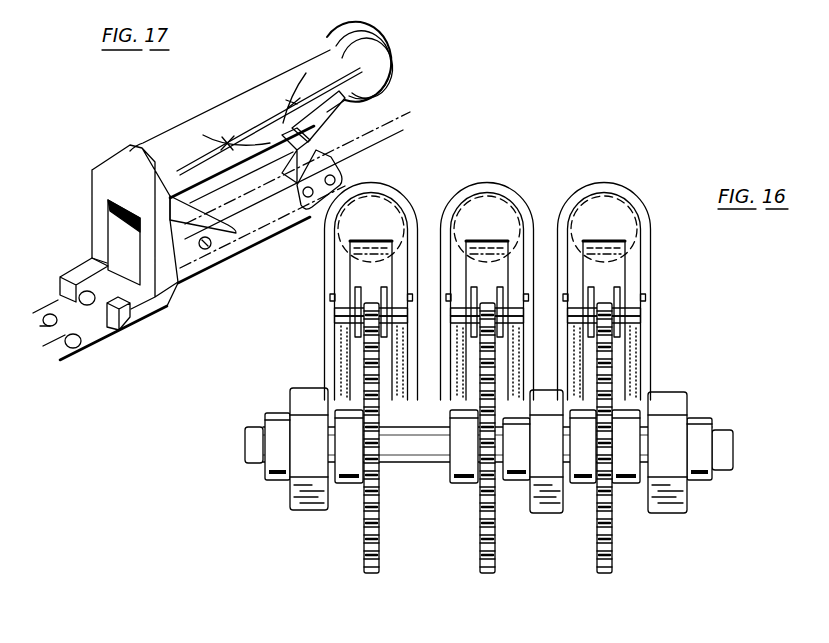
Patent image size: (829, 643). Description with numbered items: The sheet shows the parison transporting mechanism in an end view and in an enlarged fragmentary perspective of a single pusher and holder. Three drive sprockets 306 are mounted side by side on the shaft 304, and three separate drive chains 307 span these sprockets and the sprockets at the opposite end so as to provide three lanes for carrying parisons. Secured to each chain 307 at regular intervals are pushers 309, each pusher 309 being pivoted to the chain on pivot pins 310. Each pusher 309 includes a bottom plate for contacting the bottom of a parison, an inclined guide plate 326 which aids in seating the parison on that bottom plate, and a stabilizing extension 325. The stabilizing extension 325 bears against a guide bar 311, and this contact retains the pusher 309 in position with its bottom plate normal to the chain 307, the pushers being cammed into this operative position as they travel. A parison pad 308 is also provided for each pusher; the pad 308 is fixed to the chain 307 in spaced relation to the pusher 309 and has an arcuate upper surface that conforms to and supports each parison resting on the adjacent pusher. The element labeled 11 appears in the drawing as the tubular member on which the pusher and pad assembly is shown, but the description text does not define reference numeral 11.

In FIG. 17, the tubular support bar 11 is at (249, 90).
In FIG. 16, the tubular support bar 11 is at (455, 212).
In FIG. 16, the shaft 304 is at (736, 458).
In FIG. 16, the drive sprockets 306 is at (380, 553).
In FIG. 17, the drive chains 307 is at (382, 148).
In FIG. 16, the drive chains 307 is at (338, 311).
In FIG. 17, the parison pad 308 is at (340, 110).
In FIG. 17, the pusher 309 is at (170, 267).
In FIG. 17, the pivot pin 310 is at (207, 248).
In FIG. 16, the pivot pin 310 is at (330, 297).
In FIG. 16, the guide bar 311 is at (343, 343).
In FIG. 17, the stabilizing extension 325 is at (137, 314).
In FIG. 16, the stabilizing extension 325 is at (571, 320).
In FIG. 17, the inclined guide plate 326 is at (230, 227).